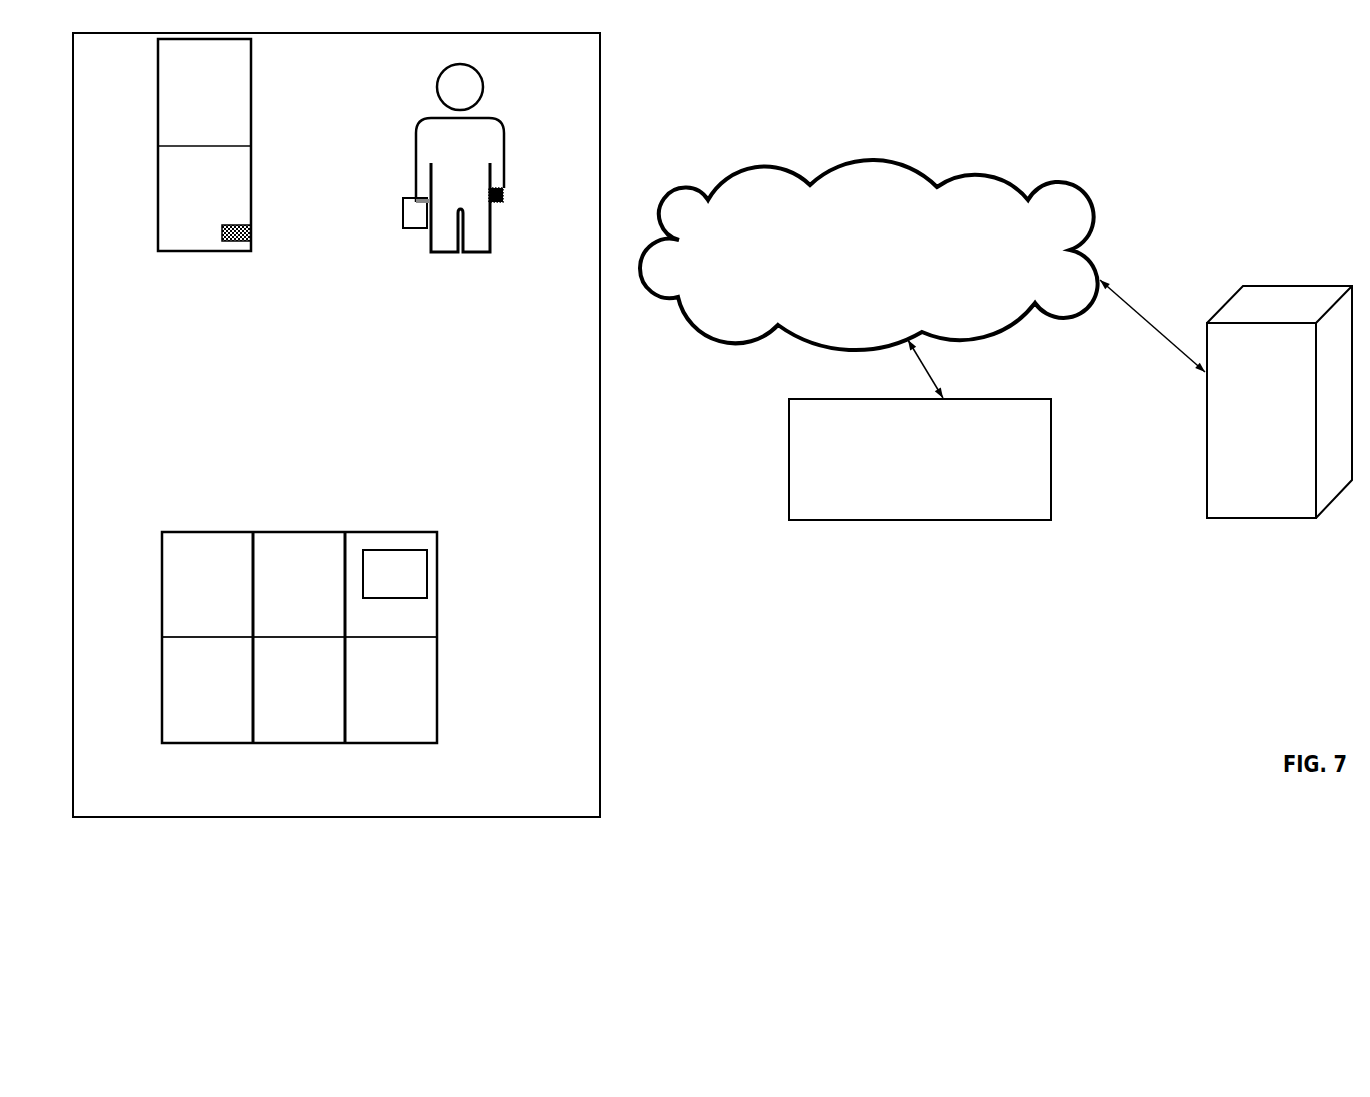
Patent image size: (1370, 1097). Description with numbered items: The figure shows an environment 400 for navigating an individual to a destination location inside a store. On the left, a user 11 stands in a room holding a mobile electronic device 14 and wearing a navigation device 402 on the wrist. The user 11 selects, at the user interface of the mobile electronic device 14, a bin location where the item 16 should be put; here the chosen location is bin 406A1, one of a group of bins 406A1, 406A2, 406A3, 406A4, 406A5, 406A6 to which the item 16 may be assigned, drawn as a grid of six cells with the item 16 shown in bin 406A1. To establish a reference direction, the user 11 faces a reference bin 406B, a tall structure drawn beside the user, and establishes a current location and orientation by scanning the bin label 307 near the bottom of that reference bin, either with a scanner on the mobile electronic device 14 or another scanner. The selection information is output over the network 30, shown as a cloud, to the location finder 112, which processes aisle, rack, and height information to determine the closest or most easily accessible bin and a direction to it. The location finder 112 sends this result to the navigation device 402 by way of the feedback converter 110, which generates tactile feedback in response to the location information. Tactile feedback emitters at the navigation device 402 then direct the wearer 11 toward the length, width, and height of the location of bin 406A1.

The environment 400 is at (1272, 135).
The refrigerator / appliance 406B is at (248, 92).
The bin label 307 is at (251, 237).
The user 11 is at (417, 127).
The mobile electronic device 14 is at (402, 203).
The navigation device 402 is at (503, 197).
The bin 406A1 is at (442, 585).
The bin 406A2 is at (423, 700).
The bin 406A3 is at (332, 592).
The bin 406A4 is at (332, 700).
The bin 406A5 is at (239, 592).
The bin 406A6 is at (239, 700).
The item 16 is at (405, 587).
The network 30 is at (917, 246).
The feedback converter 110 is at (903, 506).
The location finder 112 is at (1282, 441).